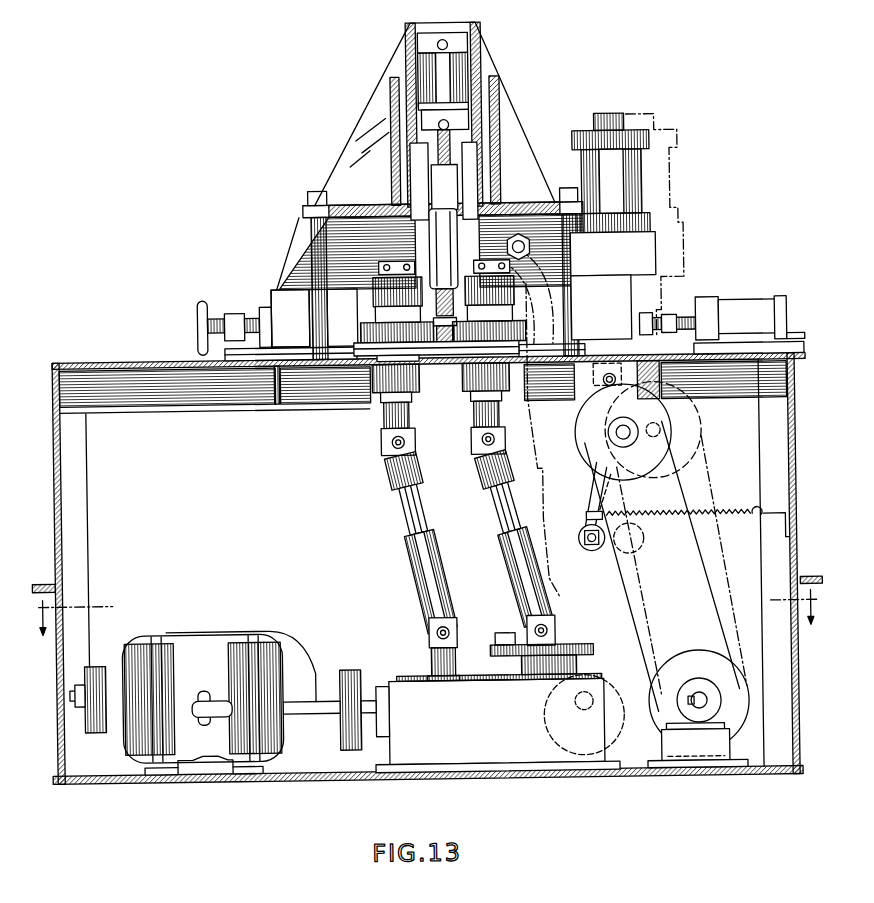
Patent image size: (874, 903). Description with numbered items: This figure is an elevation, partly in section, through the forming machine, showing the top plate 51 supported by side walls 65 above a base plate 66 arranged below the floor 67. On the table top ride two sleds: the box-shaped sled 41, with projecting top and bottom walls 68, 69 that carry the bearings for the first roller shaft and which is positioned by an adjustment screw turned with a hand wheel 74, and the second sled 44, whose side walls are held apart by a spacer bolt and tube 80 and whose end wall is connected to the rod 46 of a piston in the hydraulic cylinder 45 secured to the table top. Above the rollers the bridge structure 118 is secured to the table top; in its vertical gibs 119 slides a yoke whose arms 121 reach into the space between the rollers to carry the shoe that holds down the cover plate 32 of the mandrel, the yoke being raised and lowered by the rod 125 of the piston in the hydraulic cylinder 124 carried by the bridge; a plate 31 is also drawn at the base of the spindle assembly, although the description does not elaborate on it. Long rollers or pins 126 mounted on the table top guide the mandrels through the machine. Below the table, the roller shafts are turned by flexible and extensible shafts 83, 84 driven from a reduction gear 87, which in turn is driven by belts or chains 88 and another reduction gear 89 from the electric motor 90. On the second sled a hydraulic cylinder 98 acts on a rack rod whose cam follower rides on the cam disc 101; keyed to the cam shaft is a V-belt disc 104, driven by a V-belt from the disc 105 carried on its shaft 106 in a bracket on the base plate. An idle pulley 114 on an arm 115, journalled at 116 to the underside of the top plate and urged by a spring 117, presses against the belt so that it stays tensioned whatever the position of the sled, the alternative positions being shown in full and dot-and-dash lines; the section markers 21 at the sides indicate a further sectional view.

The section line 21 is at (429, 629).
The mounting plate 31 is at (440, 358).
The cover plate 32 is at (437, 328).
The sled 41 is at (292, 310).
The sled 44 is at (630, 305).
The hydraulic cylinder 45 is at (760, 318).
The piston rod 46 is at (684, 327).
The top plate 51 is at (108, 356).
The side walls 65 is at (62, 522).
The base plate 66 is at (634, 776).
The floor 67 is at (43, 576).
The top wall 68 is at (376, 295).
The bottom wall 69 is at (369, 392).
The hand wheel 74 is at (207, 303).
The spacer bolt and tube 80 is at (512, 252).
The flexible and extensible shaft 83 is at (420, 565).
The flexible and extensible shaft 84 is at (517, 568).
The reduction gear 87 is at (522, 753).
The belts or chains 88 is at (348, 677).
The reduction gear 89 is at (300, 661).
The electric motor 90 is at (169, 635).
The hydraulic cylinder 98 is at (690, 180).
The cam disc 101 is at (586, 479).
The V-belt disc 104 is at (588, 440).
The disc 105 is at (717, 678).
The shaft 106 is at (699, 700).
The idle pulley 114 is at (585, 552).
The arm 115 is at (590, 505).
The journal 116 is at (596, 405).
The spring 117 is at (734, 512).
The bridge structure 118 is at (397, 149).
The vertical gibs 119 is at (475, 201).
The arms 121 is at (444, 250).
The hydraulic cylinder 124 is at (480, 57).
The piston rod 125 is at (454, 153).
The long rollers or pins 126 is at (428, 350).